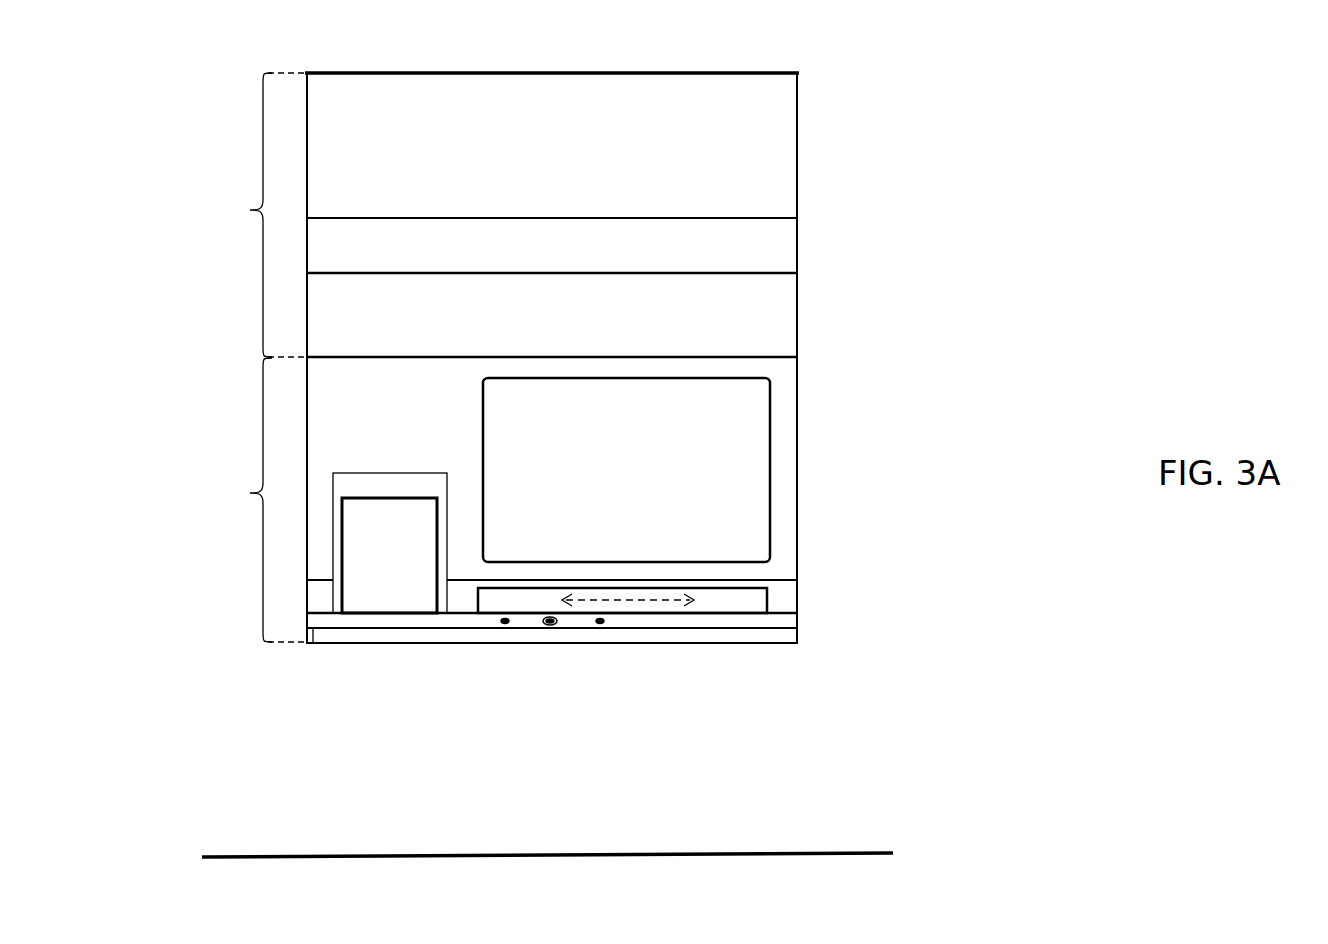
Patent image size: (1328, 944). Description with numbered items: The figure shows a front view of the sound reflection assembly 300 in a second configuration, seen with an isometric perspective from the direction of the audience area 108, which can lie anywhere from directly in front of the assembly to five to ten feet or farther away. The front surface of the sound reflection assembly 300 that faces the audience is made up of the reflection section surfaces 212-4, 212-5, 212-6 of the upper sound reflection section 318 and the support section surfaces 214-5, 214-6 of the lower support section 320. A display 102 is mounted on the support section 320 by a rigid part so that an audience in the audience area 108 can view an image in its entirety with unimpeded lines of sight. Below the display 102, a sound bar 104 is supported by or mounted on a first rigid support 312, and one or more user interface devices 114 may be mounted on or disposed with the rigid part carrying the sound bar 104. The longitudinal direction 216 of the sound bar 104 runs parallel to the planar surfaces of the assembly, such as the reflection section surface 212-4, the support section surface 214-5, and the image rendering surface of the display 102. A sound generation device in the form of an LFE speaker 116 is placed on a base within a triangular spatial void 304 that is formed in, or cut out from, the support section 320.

The sound reflection assembly 300 is at (478, 73).
The sound reflection section 318 is at (250, 210).
The support section 320 is at (250, 493).
The reflection section surface 212-4 is at (766, 188).
The reflection section surface 212-5 is at (766, 245).
The reflection section surface 212-6 is at (766, 325).
The support section surface 214-5 is at (782, 440).
The display 102 is at (768, 395).
The triangular spatial void 304 is at (398, 473).
The LFE speaker 116 is at (395, 498).
The sound bar 104 is at (740, 588).
The longitudinal direction 216 is at (598, 600).
The support section surface 214-6 is at (783, 600).
The first rigid support 312 is at (783, 639).
The user interface devices 114 is at (530, 622).
The audience area 108 is at (668, 853).